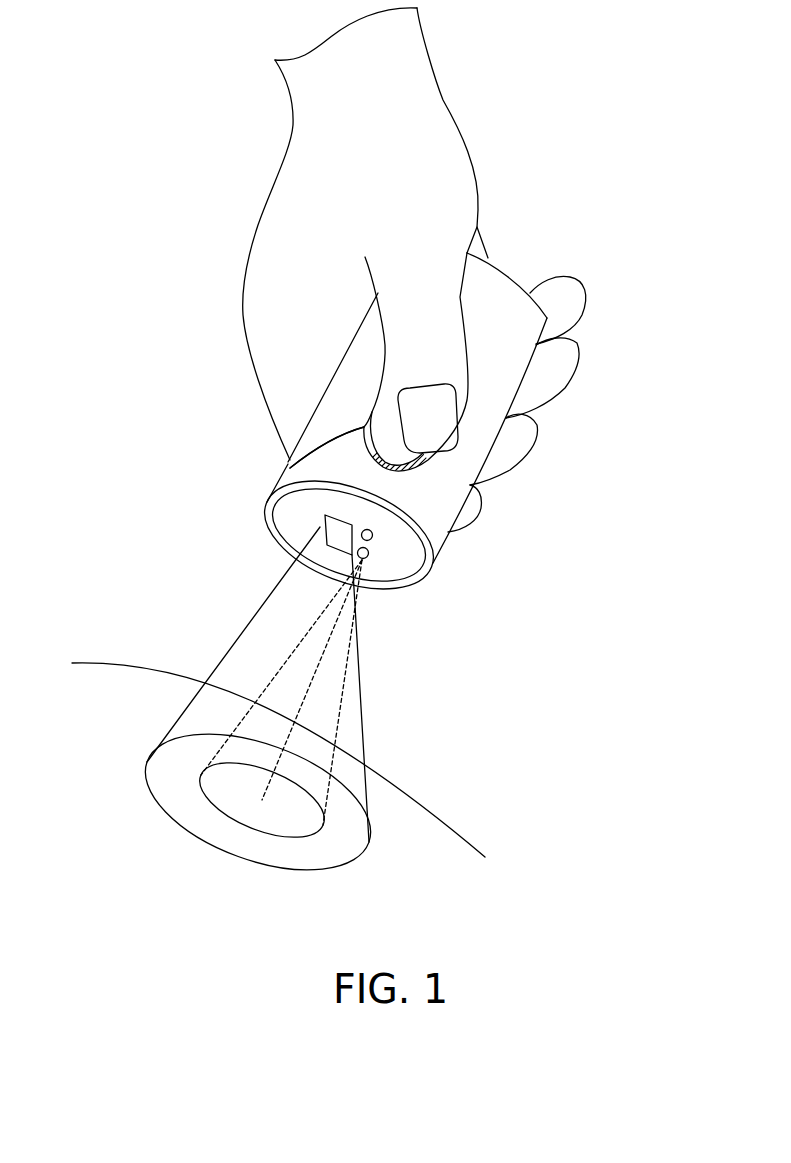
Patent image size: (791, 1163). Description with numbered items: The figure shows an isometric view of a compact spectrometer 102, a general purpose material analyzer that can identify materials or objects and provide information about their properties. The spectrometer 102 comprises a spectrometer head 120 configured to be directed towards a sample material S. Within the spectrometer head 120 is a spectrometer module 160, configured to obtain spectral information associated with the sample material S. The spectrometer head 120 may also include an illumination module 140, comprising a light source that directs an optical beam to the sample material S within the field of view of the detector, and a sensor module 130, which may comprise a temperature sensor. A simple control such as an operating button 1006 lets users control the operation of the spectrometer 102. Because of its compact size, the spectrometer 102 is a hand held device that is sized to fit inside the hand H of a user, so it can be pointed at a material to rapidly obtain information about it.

The hand H is at (422, 80).
The compact spectrometer 102 is at (510, 285).
The operating button 1006 is at (290, 468).
The spectrometer head 120 is at (260, 513).
The sensor module 130 is at (372, 533).
The illumination module 140 is at (370, 555).
The spectrometer module 160 is at (318, 528).
The sample material S is at (113, 682).